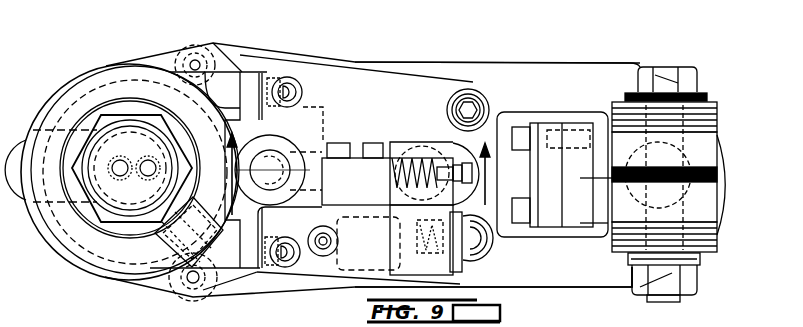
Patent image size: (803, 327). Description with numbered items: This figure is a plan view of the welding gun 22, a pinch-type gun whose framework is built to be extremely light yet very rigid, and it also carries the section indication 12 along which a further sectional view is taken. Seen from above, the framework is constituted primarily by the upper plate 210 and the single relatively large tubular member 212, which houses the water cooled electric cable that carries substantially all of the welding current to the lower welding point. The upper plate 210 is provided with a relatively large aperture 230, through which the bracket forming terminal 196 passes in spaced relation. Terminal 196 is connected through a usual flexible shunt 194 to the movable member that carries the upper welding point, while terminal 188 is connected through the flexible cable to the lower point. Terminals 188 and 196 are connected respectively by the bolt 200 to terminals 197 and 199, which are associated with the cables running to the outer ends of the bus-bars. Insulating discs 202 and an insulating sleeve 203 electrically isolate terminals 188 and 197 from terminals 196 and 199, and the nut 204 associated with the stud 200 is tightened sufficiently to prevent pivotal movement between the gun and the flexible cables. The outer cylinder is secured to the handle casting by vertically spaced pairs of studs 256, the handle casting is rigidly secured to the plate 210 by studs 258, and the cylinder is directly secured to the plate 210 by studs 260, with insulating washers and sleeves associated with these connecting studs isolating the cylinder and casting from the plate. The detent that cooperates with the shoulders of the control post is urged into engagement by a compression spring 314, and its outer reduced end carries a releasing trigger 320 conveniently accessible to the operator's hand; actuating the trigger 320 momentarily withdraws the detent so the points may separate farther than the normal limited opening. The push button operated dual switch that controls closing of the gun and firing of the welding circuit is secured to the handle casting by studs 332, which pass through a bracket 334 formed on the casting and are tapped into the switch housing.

The section line 12- 12 is at (493, 175).
The welding gun 22 is at (403, 77).
The terminal 188 is at (706, 143).
The flexible shunt 194 is at (545, 148).
The terminal 196 is at (576, 218).
The terminal 197 is at (706, 115).
The terminal 199 is at (704, 242).
The bolt 200 is at (670, 67).
The insulating discs 202 is at (703, 98).
The insulating sleeve 203 is at (720, 192).
The nut 204 is at (693, 283).
The upper plate 210 is at (505, 60).
The tubular member 212 is at (717, 172).
The aperture 230 is at (520, 112).
The studs 256 is at (276, 78).
The studs 258 is at (300, 80).
The studs 260 is at (197, 60).
The compression spring 314 is at (403, 141).
The releasing trigger 320 is at (462, 148).
The studs 332 is at (310, 137).
The bracket 334 is at (306, 150).